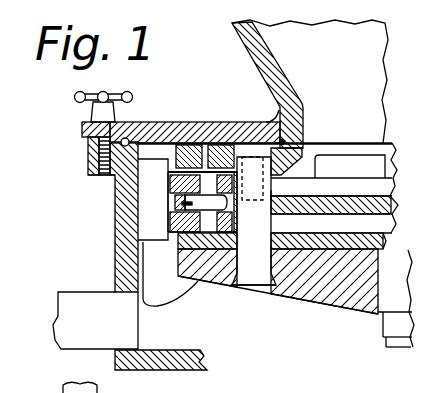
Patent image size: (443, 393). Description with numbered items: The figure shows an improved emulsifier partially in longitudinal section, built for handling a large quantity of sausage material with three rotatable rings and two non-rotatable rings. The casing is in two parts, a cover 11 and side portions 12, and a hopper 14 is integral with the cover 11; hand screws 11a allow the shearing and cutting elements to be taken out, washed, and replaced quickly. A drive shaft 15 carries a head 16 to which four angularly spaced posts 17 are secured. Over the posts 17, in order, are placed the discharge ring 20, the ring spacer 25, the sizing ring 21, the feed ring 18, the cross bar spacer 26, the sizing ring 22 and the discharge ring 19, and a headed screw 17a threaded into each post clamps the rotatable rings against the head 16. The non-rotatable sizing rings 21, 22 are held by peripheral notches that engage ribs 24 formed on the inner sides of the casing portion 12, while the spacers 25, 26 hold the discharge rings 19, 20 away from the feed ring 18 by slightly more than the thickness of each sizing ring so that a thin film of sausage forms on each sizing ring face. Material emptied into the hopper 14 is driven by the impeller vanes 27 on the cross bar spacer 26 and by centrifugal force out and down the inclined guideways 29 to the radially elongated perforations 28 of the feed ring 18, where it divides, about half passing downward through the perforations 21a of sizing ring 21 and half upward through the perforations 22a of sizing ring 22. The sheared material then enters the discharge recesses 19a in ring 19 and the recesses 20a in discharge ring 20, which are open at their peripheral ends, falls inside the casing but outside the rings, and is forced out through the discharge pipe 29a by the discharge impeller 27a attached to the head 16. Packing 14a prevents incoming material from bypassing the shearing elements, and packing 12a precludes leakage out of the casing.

The cover 11 is at (182, 120).
The hand screws 11a is at (78, 95).
The side portions 12 is at (128, 262).
The packing 12a is at (127, 139).
The hopper 14 is at (263, 62).
The packing 14a is at (283, 138).
The drive shaft 15 is at (387, 343).
The head 16 is at (327, 280).
The posts 17 is at (257, 258).
The headed screw 17a is at (245, 150).
The feed ring 18 is at (392, 203).
The discharge ring 19 is at (205, 150).
The discharge recesses 19a is at (202, 171).
The discharge ring 20 is at (367, 243).
The recesses 20a is at (220, 242).
The sizing ring 21 is at (183, 210).
The perforations 21a is at (234, 286).
The sizing ring 22 is at (178, 187).
The perforations 22a is at (167, 169).
The ribs 24 is at (151, 169).
The ring spacer 25 is at (280, 222).
The cross bar spacer 26 is at (377, 188).
The impeller vane 27 is at (343, 163).
The discharge impeller 27a is at (162, 293).
The perforations 28 is at (183, 204).
The guideways 29 is at (276, 196).
The discharge pipe 29a is at (80, 317).